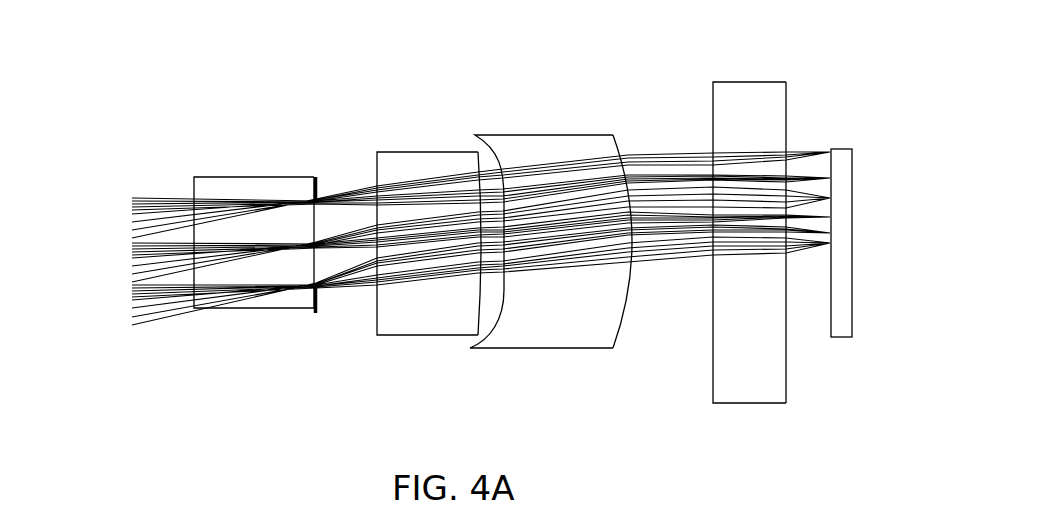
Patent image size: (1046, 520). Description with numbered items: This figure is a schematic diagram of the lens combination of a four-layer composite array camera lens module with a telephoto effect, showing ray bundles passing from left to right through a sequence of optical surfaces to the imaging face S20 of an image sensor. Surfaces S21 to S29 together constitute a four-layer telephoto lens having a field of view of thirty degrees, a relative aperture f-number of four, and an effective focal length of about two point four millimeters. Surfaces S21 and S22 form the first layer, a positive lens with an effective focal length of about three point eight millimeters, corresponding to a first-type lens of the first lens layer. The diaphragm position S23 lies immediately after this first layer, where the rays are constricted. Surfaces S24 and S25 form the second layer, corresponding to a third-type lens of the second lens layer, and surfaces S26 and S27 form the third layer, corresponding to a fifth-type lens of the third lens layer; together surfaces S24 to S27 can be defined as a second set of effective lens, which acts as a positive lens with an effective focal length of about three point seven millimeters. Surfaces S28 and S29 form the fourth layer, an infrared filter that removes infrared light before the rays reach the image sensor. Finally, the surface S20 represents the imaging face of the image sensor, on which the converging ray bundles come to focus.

The imaging face of an image sensor S20 is at (838, 315).
The surface of first layer S21 is at (194, 177).
The surface of first layer S22 is at (314, 177).
The diaphragm position S23 is at (318, 177).
The surface of second layer S24 is at (376, 186).
The surface of second layer S25 is at (479, 160).
The surface of third layer S26 is at (506, 153).
The surface of third layer S27 is at (613, 140).
The surface of fourth layer (infrared filter) S28 is at (712, 96).
The surface of fourth layer (infrared filter) S29 is at (787, 96).